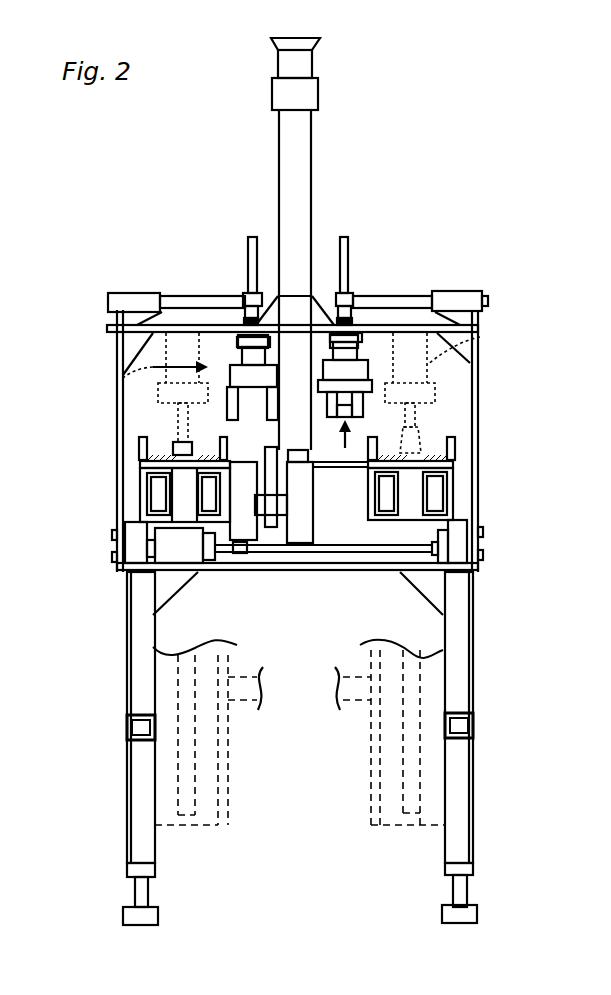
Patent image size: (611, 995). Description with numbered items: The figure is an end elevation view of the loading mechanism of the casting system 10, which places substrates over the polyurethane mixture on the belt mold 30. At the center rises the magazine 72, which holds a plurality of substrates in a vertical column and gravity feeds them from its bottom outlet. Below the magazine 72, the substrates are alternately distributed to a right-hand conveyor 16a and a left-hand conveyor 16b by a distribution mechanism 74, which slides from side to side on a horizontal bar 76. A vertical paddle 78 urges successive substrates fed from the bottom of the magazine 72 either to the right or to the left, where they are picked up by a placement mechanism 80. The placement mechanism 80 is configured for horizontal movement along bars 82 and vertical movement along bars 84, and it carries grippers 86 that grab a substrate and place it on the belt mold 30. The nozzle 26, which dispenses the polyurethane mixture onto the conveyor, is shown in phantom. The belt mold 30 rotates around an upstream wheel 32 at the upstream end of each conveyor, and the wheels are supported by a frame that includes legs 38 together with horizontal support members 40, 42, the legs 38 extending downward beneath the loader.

The casting system 10 is at (434, 101).
The magazine 72 is at (314, 180).
The bar 82 is at (178, 293).
The bar 84 is at (247, 258).
The placement mechanism 80 is at (226, 273).
The grippers 86 is at (378, 405).
The nozzle 26 is at (153, 367).
The belt mold 30 is at (141, 436).
The left-hand conveyor 16b is at (130, 492).
The right-hand conveyor 16a is at (525, 457).
The vertical paddle 78 is at (350, 503).
The distribution mechanism 74 is at (272, 561).
The horizontal bar 76 is at (382, 567).
The horizontal support member 42 is at (476, 511).
The legs 38 is at (127, 648).
The horizontal support member 40 is at (127, 723).
The upstream wheel 32 is at (228, 805).